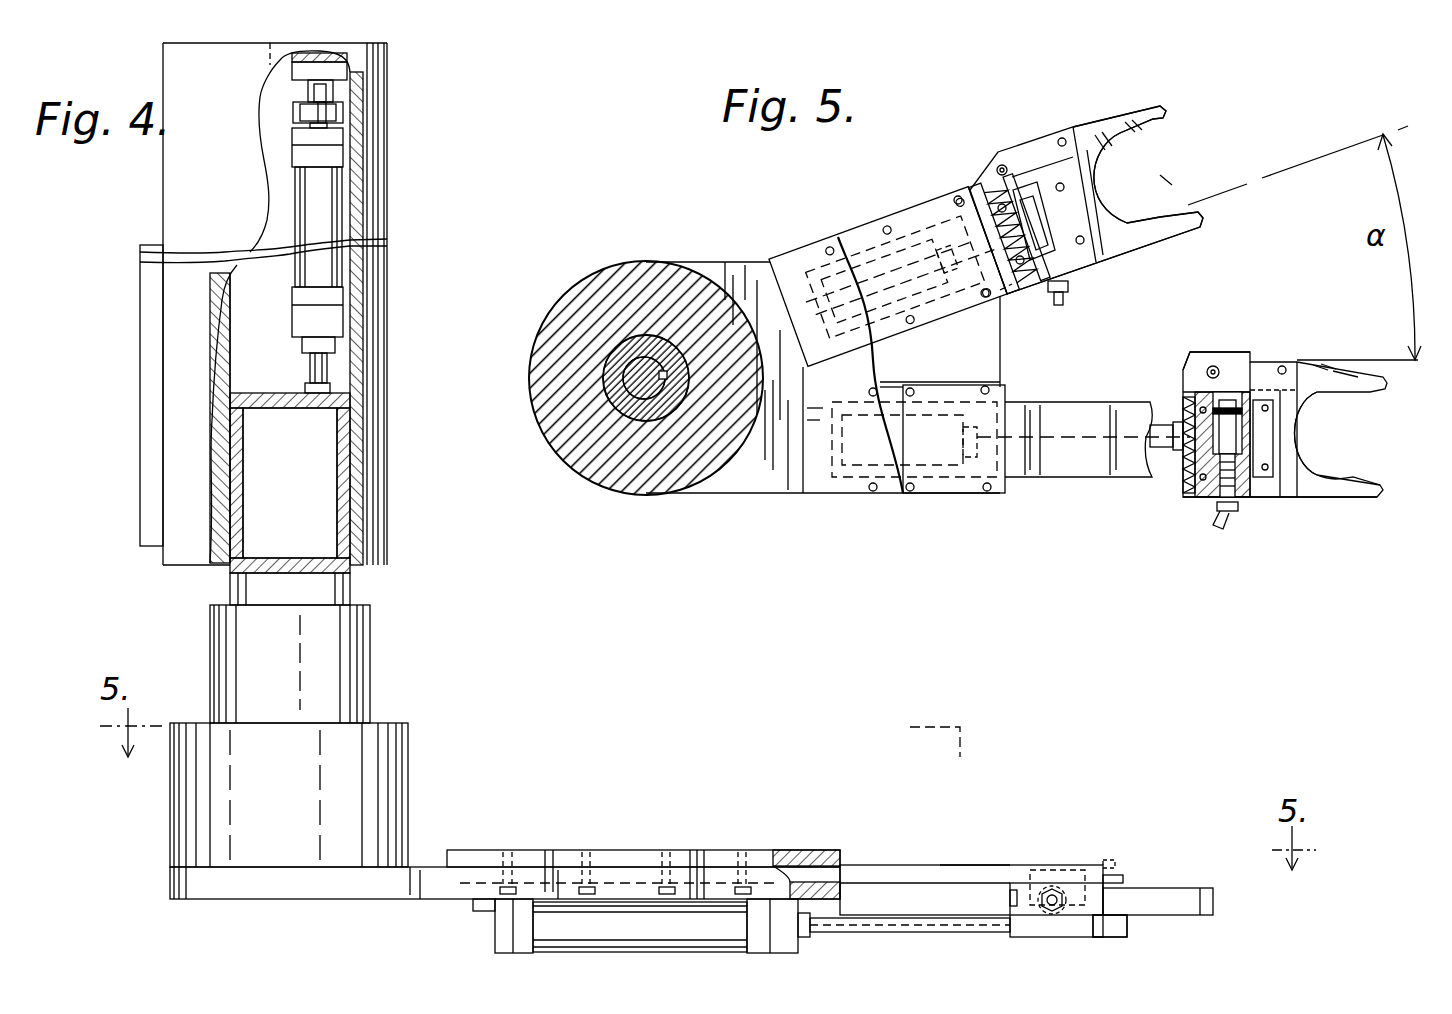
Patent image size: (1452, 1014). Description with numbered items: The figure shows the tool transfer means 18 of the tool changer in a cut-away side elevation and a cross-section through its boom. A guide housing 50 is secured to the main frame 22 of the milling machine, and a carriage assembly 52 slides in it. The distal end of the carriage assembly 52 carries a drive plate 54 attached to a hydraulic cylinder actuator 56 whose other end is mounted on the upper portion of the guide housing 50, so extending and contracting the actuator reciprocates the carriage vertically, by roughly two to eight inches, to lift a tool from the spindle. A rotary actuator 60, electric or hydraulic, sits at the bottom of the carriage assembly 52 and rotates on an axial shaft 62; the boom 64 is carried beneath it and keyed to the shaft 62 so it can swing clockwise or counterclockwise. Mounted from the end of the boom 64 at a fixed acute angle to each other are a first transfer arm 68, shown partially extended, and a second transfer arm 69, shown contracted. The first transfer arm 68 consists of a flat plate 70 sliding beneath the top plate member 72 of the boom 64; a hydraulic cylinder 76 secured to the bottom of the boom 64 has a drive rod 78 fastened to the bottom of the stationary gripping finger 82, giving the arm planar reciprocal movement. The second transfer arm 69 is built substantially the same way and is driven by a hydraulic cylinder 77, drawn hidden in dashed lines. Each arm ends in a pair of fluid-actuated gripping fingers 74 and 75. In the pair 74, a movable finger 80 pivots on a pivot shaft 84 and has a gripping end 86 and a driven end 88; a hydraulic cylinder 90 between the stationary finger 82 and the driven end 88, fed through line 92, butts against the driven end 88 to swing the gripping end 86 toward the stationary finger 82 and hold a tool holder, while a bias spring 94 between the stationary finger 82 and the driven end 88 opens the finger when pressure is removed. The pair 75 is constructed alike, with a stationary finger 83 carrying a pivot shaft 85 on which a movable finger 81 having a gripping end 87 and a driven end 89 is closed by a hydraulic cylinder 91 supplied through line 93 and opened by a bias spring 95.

In FIG. 4, the tool transfer means 18 is at (432, 372).
In FIG. 4, the main frame 22 is at (140, 482).
In FIG. 4, the guide housing 50 is at (178, 180).
In FIG. 4, the carriage assembly 52 is at (340, 643).
In FIG. 4, the drive plate 54 is at (256, 392).
In FIG. 4, the hydraulic cylinder actuator 56 is at (328, 186).
In FIG. 4, the rotary actuator 60 is at (392, 760).
In FIG. 5, the axial shaft 62 is at (643, 370).
In FIG. 4, the boom 64 is at (428, 898).
In FIG. 5, the boom 64 is at (818, 497).
In FIG. 4, the first transfer arm 68 is at (988, 862).
In FIG. 5, the first transfer arm 68 is at (1090, 472).
In FIG. 5, the second transfer arm 69 is at (958, 205).
In FIG. 4, the flat plate 70 is at (891, 872).
In FIG. 5, the flat plate 70 is at (1062, 412).
In FIG. 4, the top plate member 72 is at (634, 858).
In FIG. 5, the top plate member 72 is at (786, 262).
In FIG. 5, the pair of gripping fingers 74 is at (1375, 458).
In FIG. 5, the pair of gripping fingers 75 is at (1168, 182).
In FIG. 4, the hydraulic cylinder 76 is at (657, 936).
In FIG. 5, the hydraulic cylinder 76 is at (933, 490).
In FIG. 5, the hydraulic cylinder 77 is at (865, 250).
In FIG. 4, the drive rod 78 is at (912, 922).
In FIG. 5, the drive rod 78 is at (1046, 458).
In FIG. 5, the movable finger 80 is at (1352, 360).
In FIG. 5, the movable finger 81 is at (1104, 122).
In FIG. 4, the stationary gripping finger 82 is at (1181, 897).
In FIG. 5, the stationary gripping finger 82 is at (1344, 492).
In FIG. 5, the stationary finger 83 is at (1160, 238).
In FIG. 5, the pivot shaft 84 is at (1283, 372).
In FIG. 5, the pivot shaft 85 is at (1066, 132).
In FIG. 5, the gripping end 86 is at (1342, 390).
In FIG. 5, the gripping end 87 is at (1127, 136).
In FIG. 5, the driven end 88 is at (1200, 369).
In FIG. 5, the driven end 89 is at (985, 200).
In FIG. 4, the hydraulic cylinder 90 is at (1056, 886).
In FIG. 5, the hydraulic cylinder 90 is at (1232, 410).
In FIG. 5, the hydraulic cylinder 91 is at (1020, 178).
In FIG. 4, the line 92 is at (1057, 912).
In FIG. 5, the line 92 is at (1230, 516).
In FIG. 5, the line 93 is at (1070, 292).
In FIG. 4, the bias spring 94 is at (1010, 898).
In FIG. 5, the bias spring 94 is at (1186, 455).
In FIG. 5, the bias spring 95 is at (1014, 298).